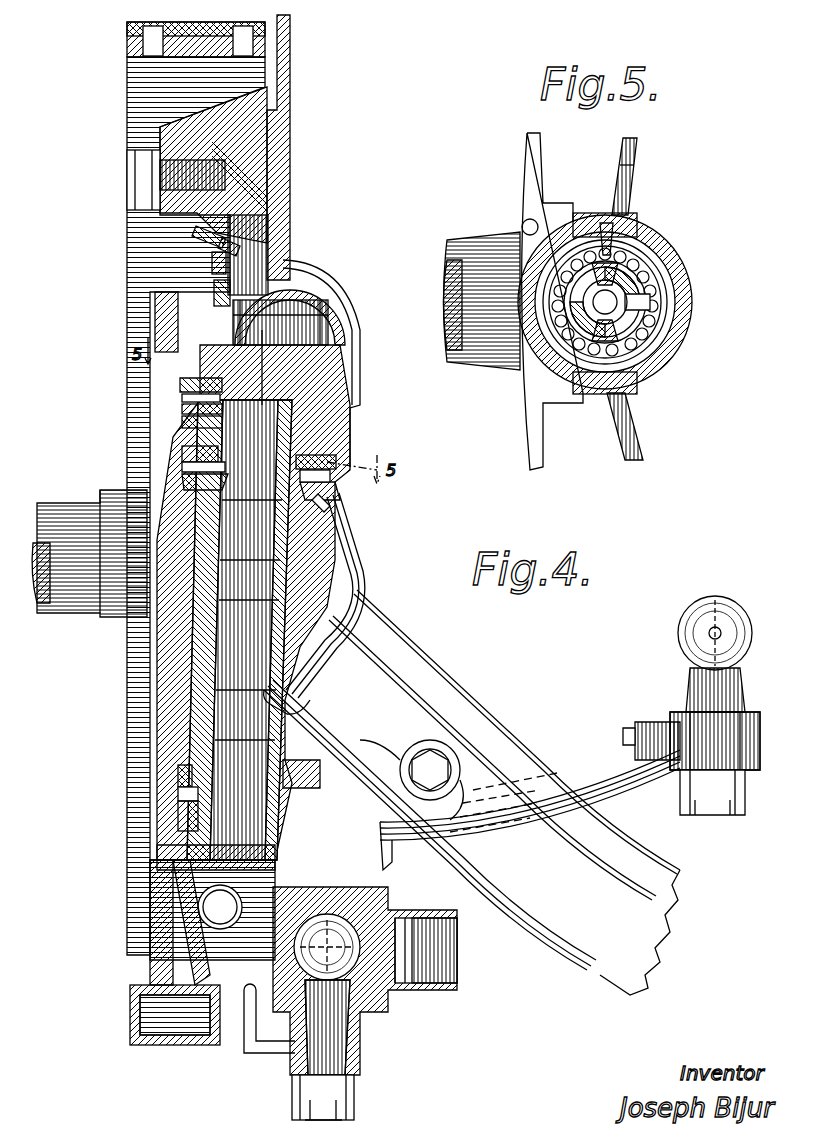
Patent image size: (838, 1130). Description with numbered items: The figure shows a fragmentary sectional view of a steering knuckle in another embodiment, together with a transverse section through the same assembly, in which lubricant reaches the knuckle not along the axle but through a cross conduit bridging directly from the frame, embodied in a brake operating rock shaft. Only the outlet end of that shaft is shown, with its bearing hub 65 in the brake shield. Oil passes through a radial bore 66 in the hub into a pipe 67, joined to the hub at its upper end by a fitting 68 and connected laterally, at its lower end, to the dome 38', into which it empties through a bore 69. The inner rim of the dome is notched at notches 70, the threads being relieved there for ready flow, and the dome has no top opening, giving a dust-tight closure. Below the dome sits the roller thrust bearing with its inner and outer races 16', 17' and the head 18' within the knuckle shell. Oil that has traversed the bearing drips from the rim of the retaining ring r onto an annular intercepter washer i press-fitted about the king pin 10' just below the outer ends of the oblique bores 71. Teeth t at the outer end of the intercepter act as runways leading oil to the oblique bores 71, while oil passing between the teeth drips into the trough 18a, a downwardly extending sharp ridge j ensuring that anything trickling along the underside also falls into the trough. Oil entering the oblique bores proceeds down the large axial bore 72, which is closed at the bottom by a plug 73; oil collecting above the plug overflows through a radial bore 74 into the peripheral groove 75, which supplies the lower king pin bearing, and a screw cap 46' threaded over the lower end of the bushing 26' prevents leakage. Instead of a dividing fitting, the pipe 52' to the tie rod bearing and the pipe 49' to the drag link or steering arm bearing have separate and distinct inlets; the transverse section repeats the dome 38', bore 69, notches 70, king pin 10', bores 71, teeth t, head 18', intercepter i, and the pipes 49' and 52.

In FIG. 4, the king pin 10' is at (214, 602).
In FIG. 5, the king pin 10' is at (619, 296).
In FIG. 4, the dome 38' is at (213, 323).
In FIG. 5, the dome 38' is at (564, 331).
In FIG. 4, the bearing hub 65 is at (200, 230).
In FIG. 4, the radial bore 66 is at (218, 240).
In FIG. 4, the pipe 67 is at (222, 302).
In FIG. 4, the fitting 68 is at (217, 262).
In FIG. 4, the notches 70 is at (178, 386).
In FIG. 5, the notches 70 is at (540, 262).
In FIG. 4, the bore 69 is at (180, 398).
In FIG. 5, the bore 69 is at (560, 222).
In FIG. 4, the bearing ring 16' is at (140, 411).
In FIG. 4, the bearing ring 17' is at (151, 424).
In FIG. 4, the intercepter washer i is at (182, 456).
In FIG. 5, the intercepter washer i is at (630, 322).
In FIG. 4, the trough 18a is at (180, 464).
In FIG. 4, the hub 18' is at (141, 483).
In FIG. 5, the hub 18' is at (663, 308).
In FIG. 4, the axial bore 72 is at (316, 496).
In FIG. 4, the sharp ridge j is at (326, 490).
In FIG. 4, the teeth t is at (327, 483).
In FIG. 5, the teeth t is at (652, 300).
In FIG. 4, the retaining ring r is at (330, 460).
In FIG. 4, the pipe 52' is at (305, 792).
In FIG. 4, the lower king pin bushing 26' is at (311, 773).
In FIG. 4, the pipe 49' is at (530, 827).
In FIG. 5, the pipe 49' is at (650, 176).
In FIG. 4, the peripheral groove 75 is at (178, 772).
In FIG. 4, the radial bore 74 is at (178, 788).
In FIG. 4, the plug 73 is at (178, 808).
In FIG. 4, the screw cap 46' is at (175, 862).
In FIG. 5, the oblique bores 71 is at (640, 283).
In FIG. 5, the rod 52 is at (649, 426).